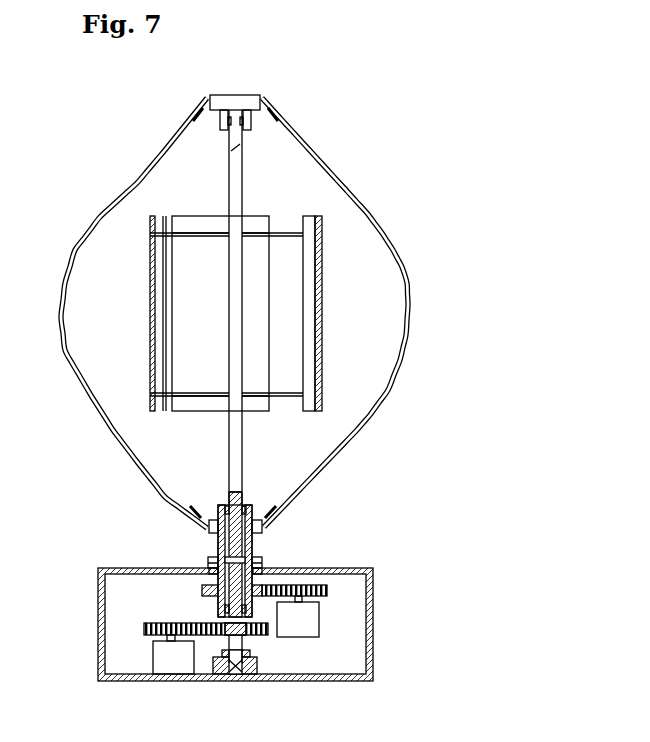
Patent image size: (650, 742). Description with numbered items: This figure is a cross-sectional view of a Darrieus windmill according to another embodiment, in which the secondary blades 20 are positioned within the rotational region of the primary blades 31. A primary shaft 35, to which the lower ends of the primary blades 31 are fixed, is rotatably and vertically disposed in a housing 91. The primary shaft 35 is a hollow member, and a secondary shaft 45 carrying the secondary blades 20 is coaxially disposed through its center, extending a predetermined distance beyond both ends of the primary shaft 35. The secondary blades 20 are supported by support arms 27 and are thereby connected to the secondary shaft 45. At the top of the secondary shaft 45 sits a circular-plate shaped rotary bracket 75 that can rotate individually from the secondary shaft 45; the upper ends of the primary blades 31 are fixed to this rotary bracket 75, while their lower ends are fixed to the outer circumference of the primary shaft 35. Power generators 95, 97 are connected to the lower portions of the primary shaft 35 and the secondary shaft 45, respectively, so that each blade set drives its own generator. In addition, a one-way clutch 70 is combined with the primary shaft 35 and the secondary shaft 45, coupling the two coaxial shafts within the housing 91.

The rotary bracket 75 is at (245, 102).
The support arms 27 is at (287, 233).
The primary blades 31 is at (367, 213).
The secondary blades 20 is at (318, 296).
The secondary shaft 45 is at (242, 451).
The primary shaft 35 is at (250, 545).
The one-way clutch 70 is at (228, 558).
The housing 91 is at (373, 596).
The power generator 95 is at (328, 626).
The power generator 97 is at (141, 653).